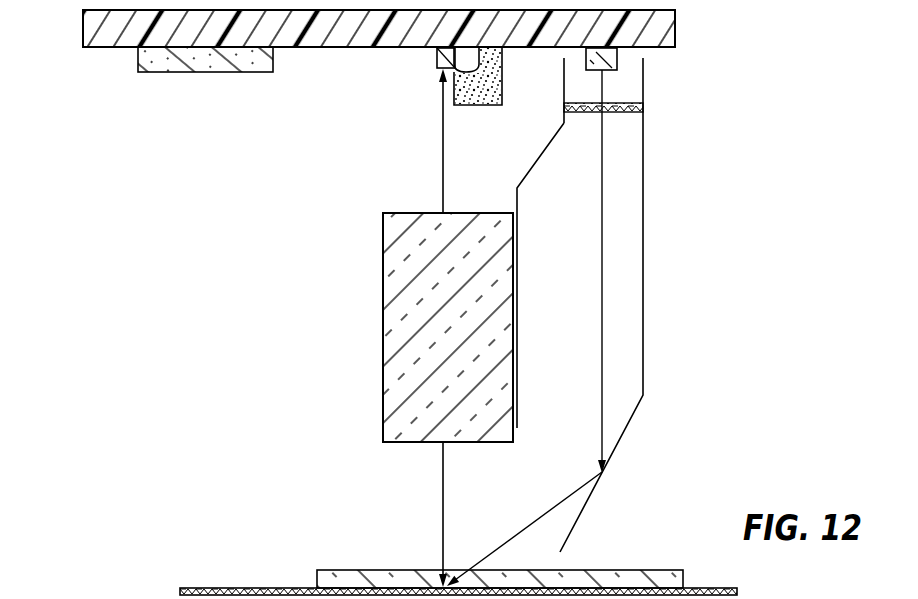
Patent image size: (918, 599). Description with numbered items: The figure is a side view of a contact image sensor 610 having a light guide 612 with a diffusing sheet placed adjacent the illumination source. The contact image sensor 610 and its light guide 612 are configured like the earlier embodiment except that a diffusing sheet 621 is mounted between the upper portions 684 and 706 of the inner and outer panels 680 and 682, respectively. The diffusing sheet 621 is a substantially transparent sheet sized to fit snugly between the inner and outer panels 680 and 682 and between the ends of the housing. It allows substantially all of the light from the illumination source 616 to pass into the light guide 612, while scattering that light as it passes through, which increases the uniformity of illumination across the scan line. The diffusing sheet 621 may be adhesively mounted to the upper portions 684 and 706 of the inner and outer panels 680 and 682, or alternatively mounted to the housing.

The contact image sensor 610 is at (104, 110).
The light guide 612 is at (617, 317).
The illumination source 616 is at (634, 64).
The diffusing sheet 621 is at (627, 112).
The inner panel 680 is at (533, 167).
The outer panel 682 is at (645, 315).
The upper portion of the inner panel 684 is at (564, 86).
The upper portion of the outer panel 706 is at (645, 204).